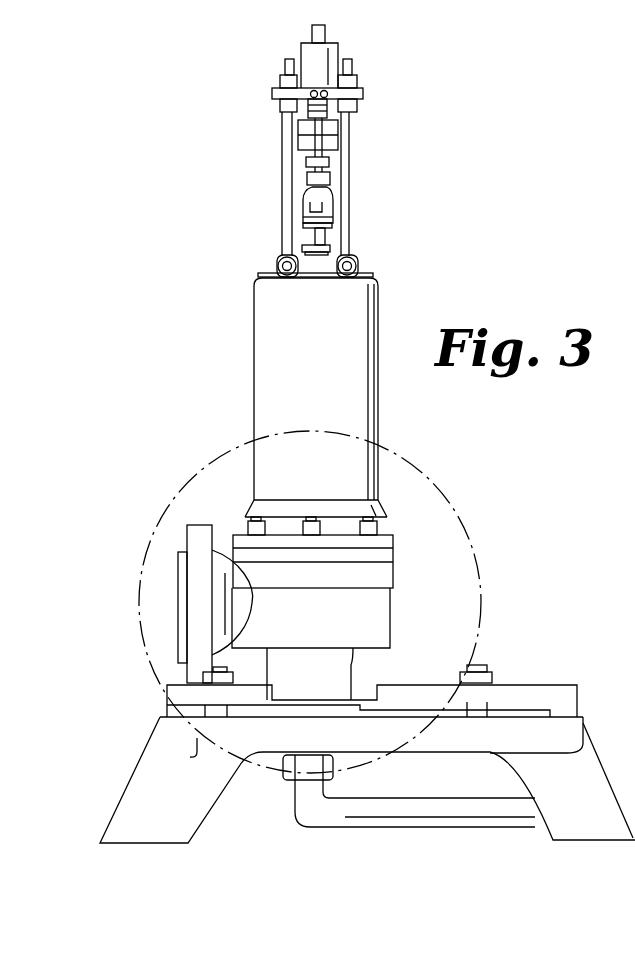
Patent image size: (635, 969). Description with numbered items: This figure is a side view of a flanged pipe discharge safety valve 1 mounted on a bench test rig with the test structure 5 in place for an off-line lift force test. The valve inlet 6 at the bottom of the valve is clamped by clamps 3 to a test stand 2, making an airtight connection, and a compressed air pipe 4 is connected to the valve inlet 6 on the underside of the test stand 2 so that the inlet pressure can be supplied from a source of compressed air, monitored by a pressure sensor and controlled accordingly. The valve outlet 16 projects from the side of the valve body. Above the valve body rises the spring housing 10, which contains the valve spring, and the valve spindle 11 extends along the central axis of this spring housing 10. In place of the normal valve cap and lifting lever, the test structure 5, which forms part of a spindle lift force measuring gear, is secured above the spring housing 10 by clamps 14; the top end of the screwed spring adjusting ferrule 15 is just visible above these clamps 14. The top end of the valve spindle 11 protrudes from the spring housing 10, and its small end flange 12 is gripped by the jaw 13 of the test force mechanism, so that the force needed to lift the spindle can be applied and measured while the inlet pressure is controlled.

The flanged pipe discharge safety valve 1 is at (391, 526).
The test stand 2 is at (579, 770).
The clamps 3 is at (502, 690).
The compressed air pipe 4 is at (300, 801).
The test structure 5 is at (288, 152).
The valve inlet 6 is at (350, 697).
The spring housing 10 is at (277, 386).
The valve spindle 11 is at (314, 238).
The small end flange 12 is at (311, 212).
The jaw 13 is at (326, 197).
The clamps 14 is at (360, 262).
The screwed spring adjusting ferrule 15 is at (332, 243).
The valve outlet 16 is at (171, 600).